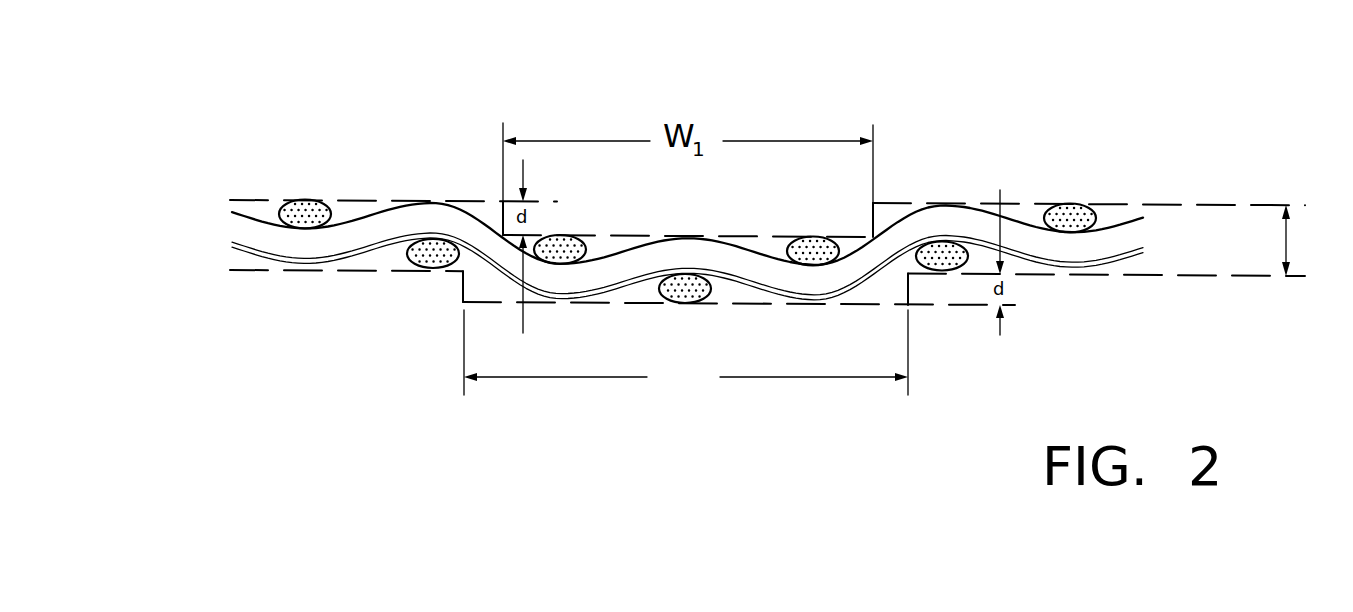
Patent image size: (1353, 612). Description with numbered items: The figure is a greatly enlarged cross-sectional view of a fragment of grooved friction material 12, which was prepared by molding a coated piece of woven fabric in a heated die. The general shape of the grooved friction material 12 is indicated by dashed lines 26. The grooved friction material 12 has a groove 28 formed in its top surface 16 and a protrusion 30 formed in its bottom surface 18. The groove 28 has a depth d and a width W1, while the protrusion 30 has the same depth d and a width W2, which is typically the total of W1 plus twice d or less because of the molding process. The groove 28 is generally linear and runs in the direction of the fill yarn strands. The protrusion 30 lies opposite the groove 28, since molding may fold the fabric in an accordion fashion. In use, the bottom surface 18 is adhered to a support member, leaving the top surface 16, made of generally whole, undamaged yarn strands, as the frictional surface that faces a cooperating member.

The grooved friction material 12 is at (936, 97).
The top surface 16 is at (893, 203).
The bottom surface 18 is at (747, 303).
The dashed lines 26 is at (1022, 205).
The groove 28 is at (882, 85).
The protrusion 30 is at (920, 437).